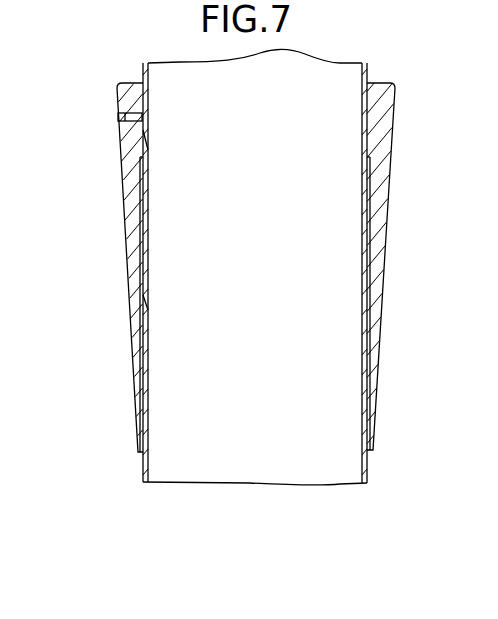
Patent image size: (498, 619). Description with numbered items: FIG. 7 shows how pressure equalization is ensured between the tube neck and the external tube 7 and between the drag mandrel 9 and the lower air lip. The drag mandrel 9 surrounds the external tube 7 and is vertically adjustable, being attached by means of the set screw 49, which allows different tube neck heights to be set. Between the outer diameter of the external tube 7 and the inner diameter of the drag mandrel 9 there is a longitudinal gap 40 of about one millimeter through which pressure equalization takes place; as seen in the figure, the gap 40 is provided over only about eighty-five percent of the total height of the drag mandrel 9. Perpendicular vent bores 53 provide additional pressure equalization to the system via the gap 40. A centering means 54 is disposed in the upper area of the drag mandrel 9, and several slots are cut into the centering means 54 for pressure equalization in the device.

The external tube 7 is at (143, 483).
The drag mandrel 9 is at (131, 264).
The longitudinal gap 40 is at (140, 451).
The set screw 49 is at (119, 116).
The vent bores 53 is at (144, 302).
The centering means 54 is at (145, 142).